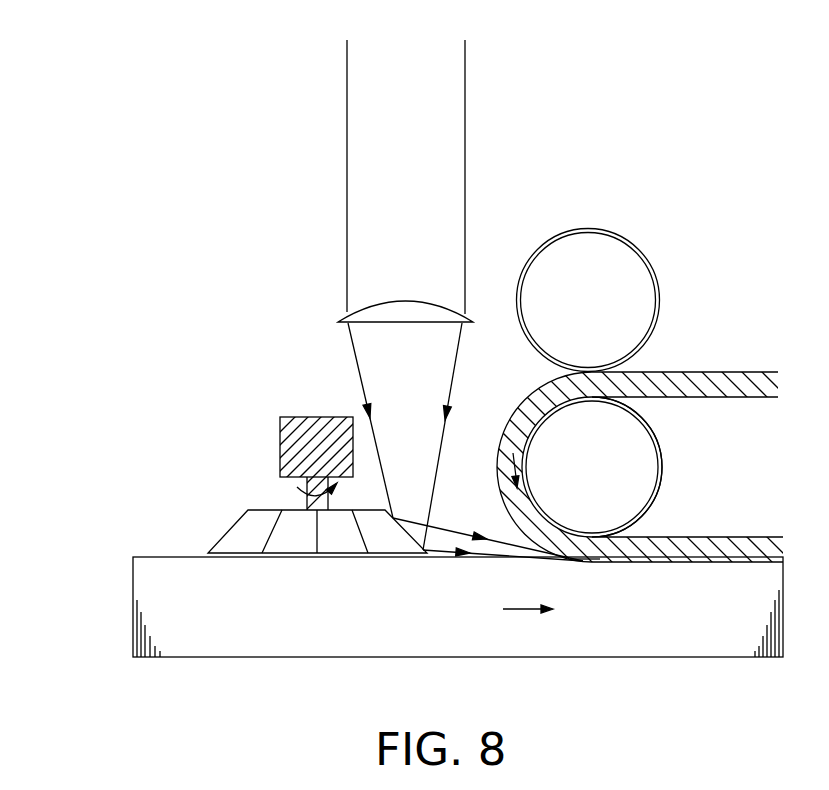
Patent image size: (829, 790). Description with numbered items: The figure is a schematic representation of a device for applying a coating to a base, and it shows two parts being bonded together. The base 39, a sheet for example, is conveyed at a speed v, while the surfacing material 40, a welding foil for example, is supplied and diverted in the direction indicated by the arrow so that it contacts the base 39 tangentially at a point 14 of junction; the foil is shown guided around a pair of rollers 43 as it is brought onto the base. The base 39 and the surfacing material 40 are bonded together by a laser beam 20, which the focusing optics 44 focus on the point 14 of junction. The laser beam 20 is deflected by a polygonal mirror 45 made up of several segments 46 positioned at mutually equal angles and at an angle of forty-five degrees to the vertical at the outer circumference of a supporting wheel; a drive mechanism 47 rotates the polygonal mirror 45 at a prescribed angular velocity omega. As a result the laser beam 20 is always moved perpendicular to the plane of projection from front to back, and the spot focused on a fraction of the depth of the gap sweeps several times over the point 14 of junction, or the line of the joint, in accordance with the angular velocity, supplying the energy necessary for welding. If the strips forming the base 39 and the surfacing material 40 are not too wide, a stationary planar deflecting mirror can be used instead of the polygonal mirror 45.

The laser beam 20 is at (452, 79).
The focusing optics 44 is at (343, 318).
The drive mechanism 47 is at (300, 425).
The segments 46 is at (235, 533).
The polygonal mirror 45 is at (182, 540).
The base 39 is at (218, 638).
The rollers 43 is at (607, 314).
The surfacing material 40 is at (772, 383).
The point of junction 14 is at (583, 562).